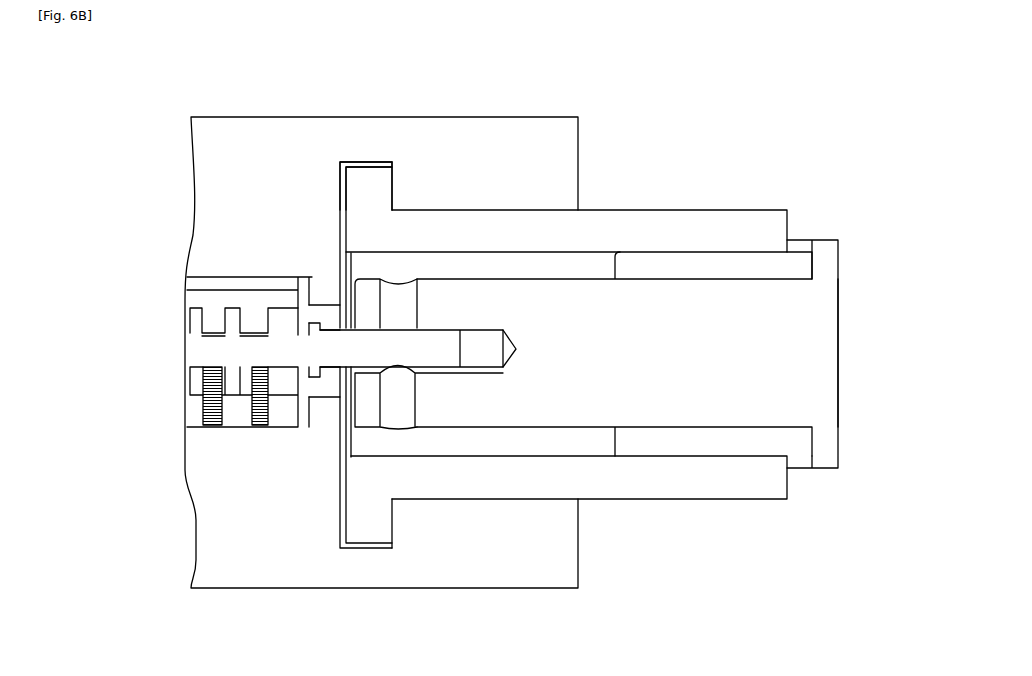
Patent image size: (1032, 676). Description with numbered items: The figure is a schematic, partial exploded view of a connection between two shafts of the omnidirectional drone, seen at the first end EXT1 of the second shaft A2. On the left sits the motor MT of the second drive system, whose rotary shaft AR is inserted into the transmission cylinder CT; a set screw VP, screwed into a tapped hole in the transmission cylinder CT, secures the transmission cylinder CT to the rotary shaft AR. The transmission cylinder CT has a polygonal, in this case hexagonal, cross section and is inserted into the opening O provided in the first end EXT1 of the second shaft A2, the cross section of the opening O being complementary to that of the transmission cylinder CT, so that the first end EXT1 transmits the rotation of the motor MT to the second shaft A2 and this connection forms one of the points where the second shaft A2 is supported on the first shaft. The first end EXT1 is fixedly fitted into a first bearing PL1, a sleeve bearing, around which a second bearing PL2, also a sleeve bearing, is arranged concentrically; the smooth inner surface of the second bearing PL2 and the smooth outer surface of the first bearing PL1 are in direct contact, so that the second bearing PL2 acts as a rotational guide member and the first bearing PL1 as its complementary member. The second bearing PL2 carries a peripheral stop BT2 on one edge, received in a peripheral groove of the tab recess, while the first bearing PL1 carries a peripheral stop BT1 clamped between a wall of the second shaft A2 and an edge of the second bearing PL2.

The motor MT is at (196, 408).
The transmission cylinder CT is at (338, 258).
The peripheral stop BT2 is at (367, 182).
The first bearing PL1 is at (728, 267).
The first end EXT1 is at (674, 320).
The second bearing PL2 is at (730, 488).
The peripheral stop BT1 is at (798, 250).
The second shaft A2 is at (813, 376).
The set screw VP is at (398, 388).
The rotary shaft AR is at (338, 353).
The opening O is at (493, 353).